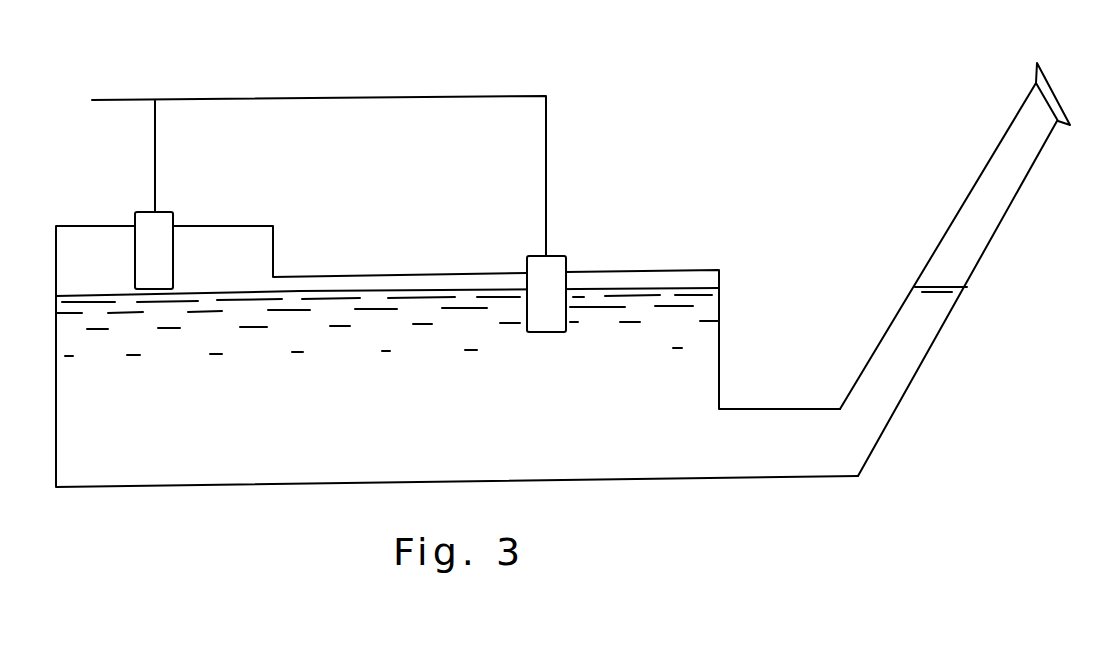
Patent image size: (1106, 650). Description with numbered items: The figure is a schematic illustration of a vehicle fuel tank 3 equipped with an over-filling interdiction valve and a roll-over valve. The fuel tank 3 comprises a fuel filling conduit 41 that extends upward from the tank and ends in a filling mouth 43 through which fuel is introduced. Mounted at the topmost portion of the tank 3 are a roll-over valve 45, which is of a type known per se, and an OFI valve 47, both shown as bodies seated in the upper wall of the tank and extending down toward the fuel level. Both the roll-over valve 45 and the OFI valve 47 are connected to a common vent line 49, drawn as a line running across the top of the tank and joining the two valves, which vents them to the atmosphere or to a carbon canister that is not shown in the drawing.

The fuel tank 3 is at (660, 268).
The fuel filling conduit 41 is at (989, 162).
The filling mouth 43 is at (1052, 88).
The roll-over valve 45 is at (553, 270).
The OFI valve 47 is at (146, 217).
The vent line 49 is at (127, 100).